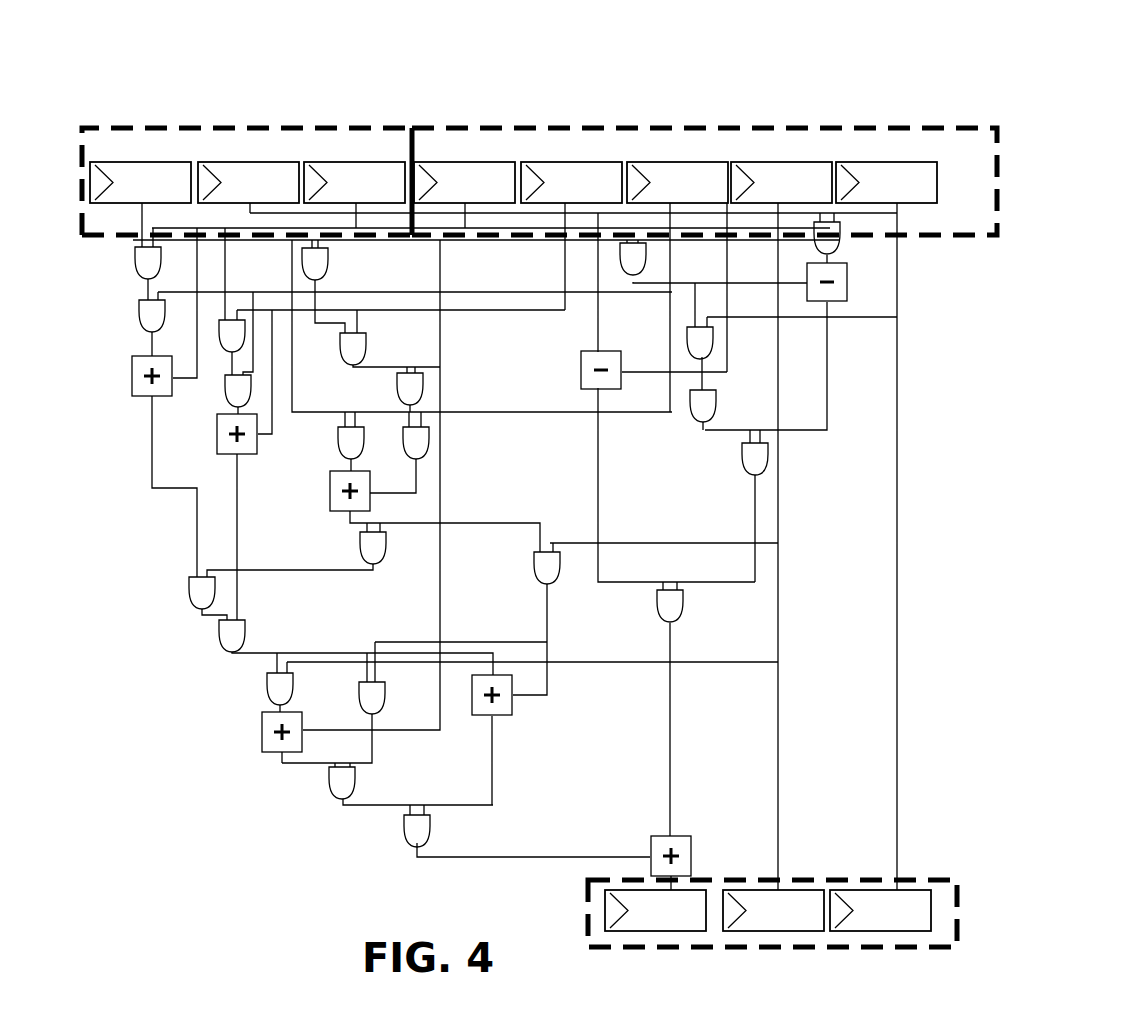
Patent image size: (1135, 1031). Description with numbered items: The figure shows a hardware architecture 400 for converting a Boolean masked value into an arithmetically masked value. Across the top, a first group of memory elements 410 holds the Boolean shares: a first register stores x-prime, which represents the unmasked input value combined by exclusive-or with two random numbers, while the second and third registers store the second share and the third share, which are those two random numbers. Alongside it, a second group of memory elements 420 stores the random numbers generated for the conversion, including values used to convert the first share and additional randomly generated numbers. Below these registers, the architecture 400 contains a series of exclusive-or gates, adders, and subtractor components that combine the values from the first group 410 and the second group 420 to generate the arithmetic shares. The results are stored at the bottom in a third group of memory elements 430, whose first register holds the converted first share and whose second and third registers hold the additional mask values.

The hardware architecture 400 is at (910, 72).
The first group of memory elements 410 is at (118, 128).
The second group of memory elements 420 is at (603, 128).
The third group of memory elements 430 is at (928, 880).